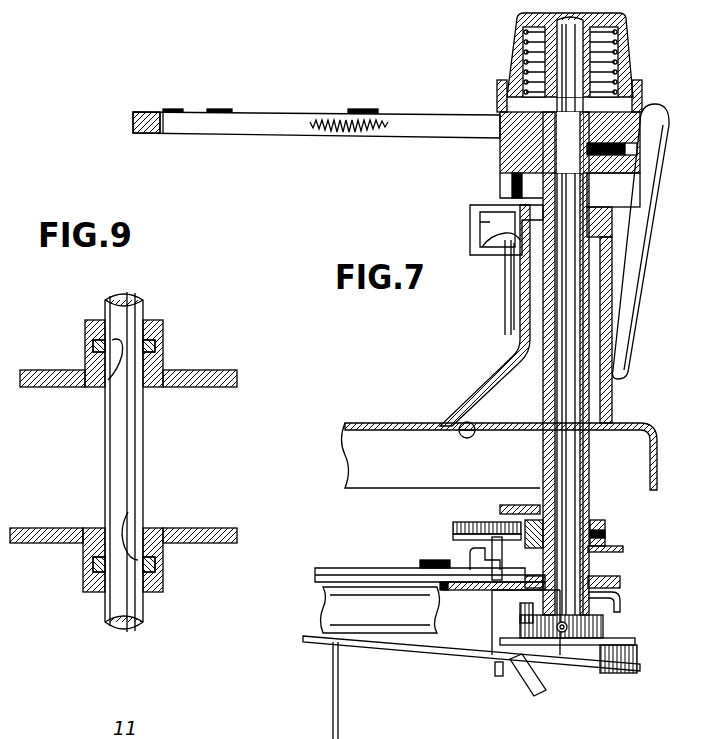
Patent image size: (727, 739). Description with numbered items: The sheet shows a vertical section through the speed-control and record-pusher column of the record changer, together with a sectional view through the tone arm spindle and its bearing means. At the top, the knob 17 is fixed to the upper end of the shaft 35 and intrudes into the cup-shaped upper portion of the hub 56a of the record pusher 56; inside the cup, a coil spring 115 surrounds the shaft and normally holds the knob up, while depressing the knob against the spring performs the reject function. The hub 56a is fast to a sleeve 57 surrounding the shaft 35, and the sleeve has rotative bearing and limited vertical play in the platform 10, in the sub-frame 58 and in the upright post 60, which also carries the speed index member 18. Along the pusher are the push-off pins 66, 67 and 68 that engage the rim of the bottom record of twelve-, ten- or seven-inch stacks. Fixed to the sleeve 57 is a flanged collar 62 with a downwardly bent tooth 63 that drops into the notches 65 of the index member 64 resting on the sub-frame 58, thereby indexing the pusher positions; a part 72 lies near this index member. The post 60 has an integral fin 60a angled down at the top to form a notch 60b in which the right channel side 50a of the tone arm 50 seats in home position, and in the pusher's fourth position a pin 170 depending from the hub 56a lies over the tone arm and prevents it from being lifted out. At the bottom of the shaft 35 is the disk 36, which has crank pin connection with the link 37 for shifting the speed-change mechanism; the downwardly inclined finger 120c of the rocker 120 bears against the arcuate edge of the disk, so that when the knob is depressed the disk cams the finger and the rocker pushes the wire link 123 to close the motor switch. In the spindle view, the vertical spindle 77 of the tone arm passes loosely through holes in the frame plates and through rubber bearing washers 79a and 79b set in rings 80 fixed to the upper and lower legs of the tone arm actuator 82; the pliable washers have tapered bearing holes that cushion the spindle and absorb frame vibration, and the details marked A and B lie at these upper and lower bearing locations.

In FIG. 7, the knob 17 is at (516, 22).
In FIG. 7, the coil spring 115 is at (610, 58).
In FIG. 7, the speed index member 18 is at (660, 118).
In FIG. 7, the shaft 35 is at (568, 399).
In FIG. 7, the record pusher 56 is at (318, 127).
In FIG. 7, the hub 56a is at (512, 134).
In FIG. 7, the sleeve 57 is at (584, 188).
In FIG. 7, the pin 170 is at (512, 187).
In FIG. 7, the push pin 68 is at (173, 108).
In FIG. 7, the push-off pin 67 is at (218, 108).
In FIG. 7, the push-off pin 66 is at (366, 108).
In FIG. 7, the tone arm 50 is at (470, 225).
In FIG. 7, the right channel side 50a is at (500, 242).
In FIG. 7, the upright post 60 is at (478, 392).
In FIG. 7, the fin 60a is at (510, 308).
In FIG. 7, the notch 60b is at (506, 250).
In FIG. 7, the platform 10 is at (388, 422).
In FIG. 7, the flanged collar 62 is at (598, 525).
In FIG. 7, the index member 64 is at (620, 580).
In FIG. 7, the sub-frame 58 is at (348, 575).
In FIG. 7, the tooth 63 is at (470, 552).
In FIG. 7, the interdental notches 65 is at (436, 578).
In FIG. 7, the block 72 is at (447, 590).
In FIG. 7, the rocker 120 is at (502, 624).
In FIG. 7, the finger 120c is at (540, 690).
In FIG. 7, the wire link 123 is at (505, 680).
In FIG. 7, the disk 36 is at (618, 639).
In FIG. 7, the link 37 is at (430, 652).
In FIG. 9, the vertical spindle 77 is at (136, 304).
In FIG. 9, the rings 80 is at (165, 330).
In FIG. 9, the rubber bearing washer 79a is at (156, 350).
In FIG. 9, the rubber bearing washer 79b is at (156, 565).
In FIG. 9, the tone arm actuator 82 is at (208, 528).
In FIG. 9, the point A is at (110, 355).
In FIG. 9, the point B is at (133, 525).